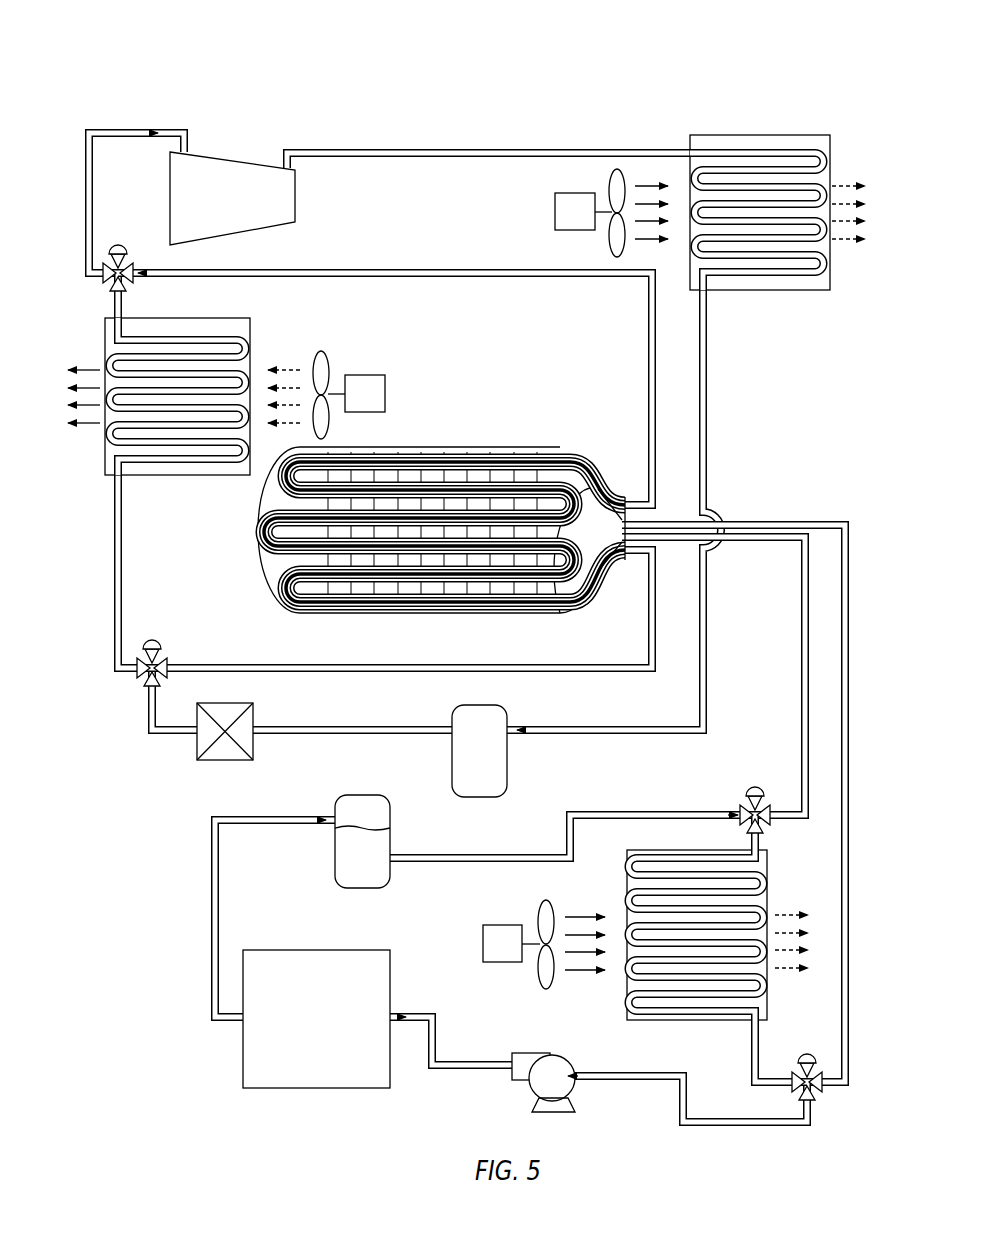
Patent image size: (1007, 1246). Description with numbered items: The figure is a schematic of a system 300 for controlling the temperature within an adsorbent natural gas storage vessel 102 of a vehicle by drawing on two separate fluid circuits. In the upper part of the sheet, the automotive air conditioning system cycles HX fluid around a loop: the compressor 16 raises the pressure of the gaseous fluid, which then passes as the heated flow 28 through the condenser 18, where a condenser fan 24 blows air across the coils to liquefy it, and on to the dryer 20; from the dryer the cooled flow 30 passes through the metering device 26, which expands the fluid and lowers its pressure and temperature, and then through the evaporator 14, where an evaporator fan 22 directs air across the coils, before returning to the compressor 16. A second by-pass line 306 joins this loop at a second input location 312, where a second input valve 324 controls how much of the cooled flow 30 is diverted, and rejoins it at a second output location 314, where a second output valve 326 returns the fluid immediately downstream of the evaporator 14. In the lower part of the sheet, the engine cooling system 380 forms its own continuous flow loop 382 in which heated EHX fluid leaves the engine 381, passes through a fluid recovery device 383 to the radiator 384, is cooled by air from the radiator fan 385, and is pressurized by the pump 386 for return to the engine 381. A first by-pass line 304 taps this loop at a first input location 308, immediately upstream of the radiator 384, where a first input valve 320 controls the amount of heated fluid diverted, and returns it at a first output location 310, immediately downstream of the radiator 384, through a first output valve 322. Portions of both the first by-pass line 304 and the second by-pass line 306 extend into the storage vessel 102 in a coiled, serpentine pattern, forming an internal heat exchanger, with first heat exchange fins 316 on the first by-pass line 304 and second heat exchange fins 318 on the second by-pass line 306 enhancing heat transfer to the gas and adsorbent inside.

The system 300 is at (196, 104).
The cooled flow 30 is at (86, 158).
The second output valve 326 is at (113, 248).
The condenser fan 24 is at (555, 212).
The compressor 16 is at (242, 211).
The heated flow 28 is at (492, 150).
The condenser 18 is at (782, 135).
The second output location 314 is at (103, 287).
The evaporator fan 22 is at (365, 375).
The first heat exchange fins 316 is at (445, 460).
The second heat exchange fins 318 is at (527, 460).
The adsorbent natural gas storage vessel 102 is at (410, 493).
The evaporator 14 is at (96, 455).
The second input valve 324 is at (157, 643).
The second input location 312 is at (180, 654).
The second by-pass line 306 is at (410, 518).
The first by-pass line 304 is at (795, 668).
The metering device 26 is at (222, 760).
The dryer 20 is at (507, 765).
The first input valve 320 is at (750, 785).
The first input location 308 is at (735, 800).
The radiator 384 is at (770, 880).
The continuous flow loop 382 is at (210, 905).
The fluid recovery device 383 is at (335, 870).
The radiator fan 385 is at (483, 943).
The engine 381 is at (333, 1033).
The engine cooling system 380 is at (213, 1063).
The pump 386 is at (553, 1055).
The first output valve 322 is at (798, 1058).
The first output location 310 is at (825, 1100).